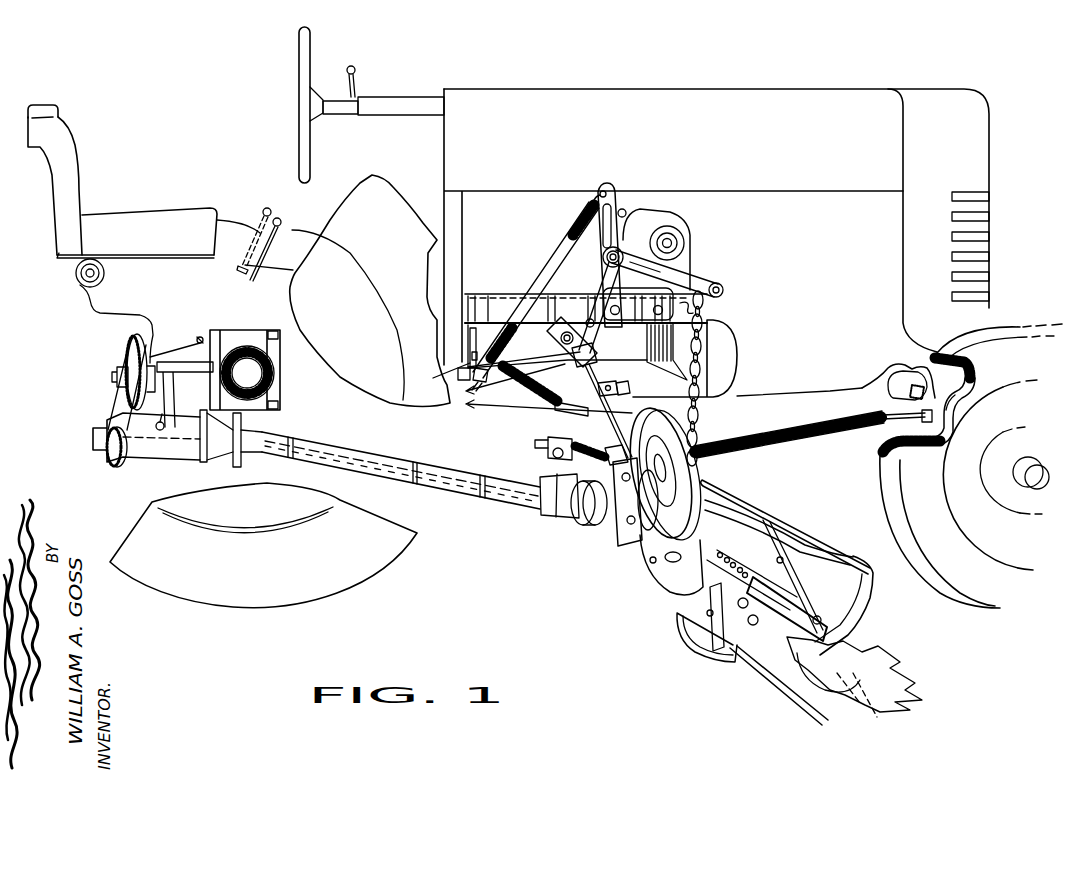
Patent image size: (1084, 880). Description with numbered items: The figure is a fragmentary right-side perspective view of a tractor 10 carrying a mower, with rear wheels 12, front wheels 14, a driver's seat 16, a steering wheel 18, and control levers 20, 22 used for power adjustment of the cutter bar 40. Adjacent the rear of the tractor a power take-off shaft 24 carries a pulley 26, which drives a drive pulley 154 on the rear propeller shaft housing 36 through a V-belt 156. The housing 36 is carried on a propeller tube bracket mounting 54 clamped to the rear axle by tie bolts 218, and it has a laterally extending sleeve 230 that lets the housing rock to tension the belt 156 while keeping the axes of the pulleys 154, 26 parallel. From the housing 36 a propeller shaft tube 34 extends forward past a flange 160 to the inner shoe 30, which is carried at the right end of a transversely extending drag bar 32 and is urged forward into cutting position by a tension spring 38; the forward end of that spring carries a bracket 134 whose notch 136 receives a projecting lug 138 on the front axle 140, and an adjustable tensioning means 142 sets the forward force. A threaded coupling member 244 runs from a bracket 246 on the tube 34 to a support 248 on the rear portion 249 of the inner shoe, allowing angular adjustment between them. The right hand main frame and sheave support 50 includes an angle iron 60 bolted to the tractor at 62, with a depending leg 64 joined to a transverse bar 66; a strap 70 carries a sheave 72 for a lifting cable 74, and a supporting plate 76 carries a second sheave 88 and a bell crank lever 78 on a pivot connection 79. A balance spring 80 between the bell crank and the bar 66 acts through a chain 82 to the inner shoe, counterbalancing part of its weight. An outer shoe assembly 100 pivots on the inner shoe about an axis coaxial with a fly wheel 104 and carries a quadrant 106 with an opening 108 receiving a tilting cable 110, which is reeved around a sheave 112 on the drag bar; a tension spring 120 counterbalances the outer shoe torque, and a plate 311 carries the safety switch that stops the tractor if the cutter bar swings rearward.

The tractor 10 is at (945, 94).
The rear wheels 12 is at (390, 547).
The front wheels 14 is at (1036, 602).
The driver's seat 16 is at (153, 215).
The steering wheel 18 is at (304, 95).
The control lever 20 is at (263, 211).
The control lever 22 is at (280, 226).
The power take-off shaft 24 is at (114, 377).
The power take-off pulley 26 is at (128, 343).
The inner shoe 30 is at (738, 502).
The drag bar 32 is at (606, 402).
The propeller shaft tube 34 is at (462, 481).
The rear propeller shaft housing 36 is at (157, 452).
The tension spring 38 is at (830, 436).
The cutter bar 40 is at (810, 713).
The right hand main frame and sheave support 50 is at (499, 293).
The propeller tube bracket mounting 54 is at (280, 371).
The angle iron 60 is at (587, 296).
The bolt connection 62 is at (693, 310).
The depending leg 64 is at (474, 343).
The transverse bar 66 is at (462, 373).
The strap 70 is at (552, 332).
The sheave 72 is at (589, 323).
The lifting cable 74 is at (597, 337).
The supporting plate 76 is at (677, 227).
The bell crank lever 78 is at (697, 280).
The pivot connection 79 is at (607, 259).
The balance spring 80 is at (553, 258).
The chain 82 is at (712, 377).
The sheave 88 is at (686, 240).
The outer shoe assembly 100 is at (698, 668).
The fly wheel 104 is at (873, 667).
The quadrant 106 is at (672, 418).
The opening 108 is at (677, 557).
The tilting cable 110 is at (510, 406).
The sheave 112 is at (553, 393).
The tension spring 120 is at (520, 381).
The bracket 134 is at (903, 375).
The notch 136 is at (953, 377).
The projecting lug 138 is at (975, 380).
The front axle 140 is at (950, 404).
The adjustable tensioning means 142 is at (885, 437).
The drive pulley 154 is at (113, 462).
The V-belt 156 is at (120, 398).
The flange 160 is at (226, 461).
The tie bolts 218 is at (255, 333).
The laterally extending sleeve 230 is at (181, 427).
The threaded coupling member 244 is at (588, 442).
The bracket 246 is at (546, 456).
The support 248 is at (595, 530).
The rear portion of inner shoe 249 is at (637, 523).
The plate 311 is at (628, 378).